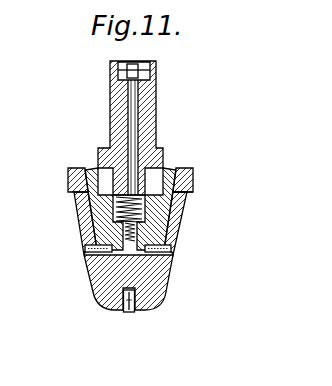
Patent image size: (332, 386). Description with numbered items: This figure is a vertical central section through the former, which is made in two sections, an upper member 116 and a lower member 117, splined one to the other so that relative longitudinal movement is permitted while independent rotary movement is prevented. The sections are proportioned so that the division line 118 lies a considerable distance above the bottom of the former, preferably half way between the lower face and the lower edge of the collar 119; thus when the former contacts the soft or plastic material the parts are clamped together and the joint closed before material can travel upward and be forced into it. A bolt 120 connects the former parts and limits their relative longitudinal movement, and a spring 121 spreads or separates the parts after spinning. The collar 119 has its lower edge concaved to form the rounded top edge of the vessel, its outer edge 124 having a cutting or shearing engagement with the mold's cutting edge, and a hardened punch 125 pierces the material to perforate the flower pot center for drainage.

The bolt 120 is at (142, 99).
The spring 121 is at (167, 168).
The collar 119 is at (69, 181).
The upper member 116 is at (81, 215).
The outer edge 124 is at (192, 195).
The division line 118 is at (150, 250).
The lower member 117 is at (168, 286).
The hardened punch 125 is at (124, 304).